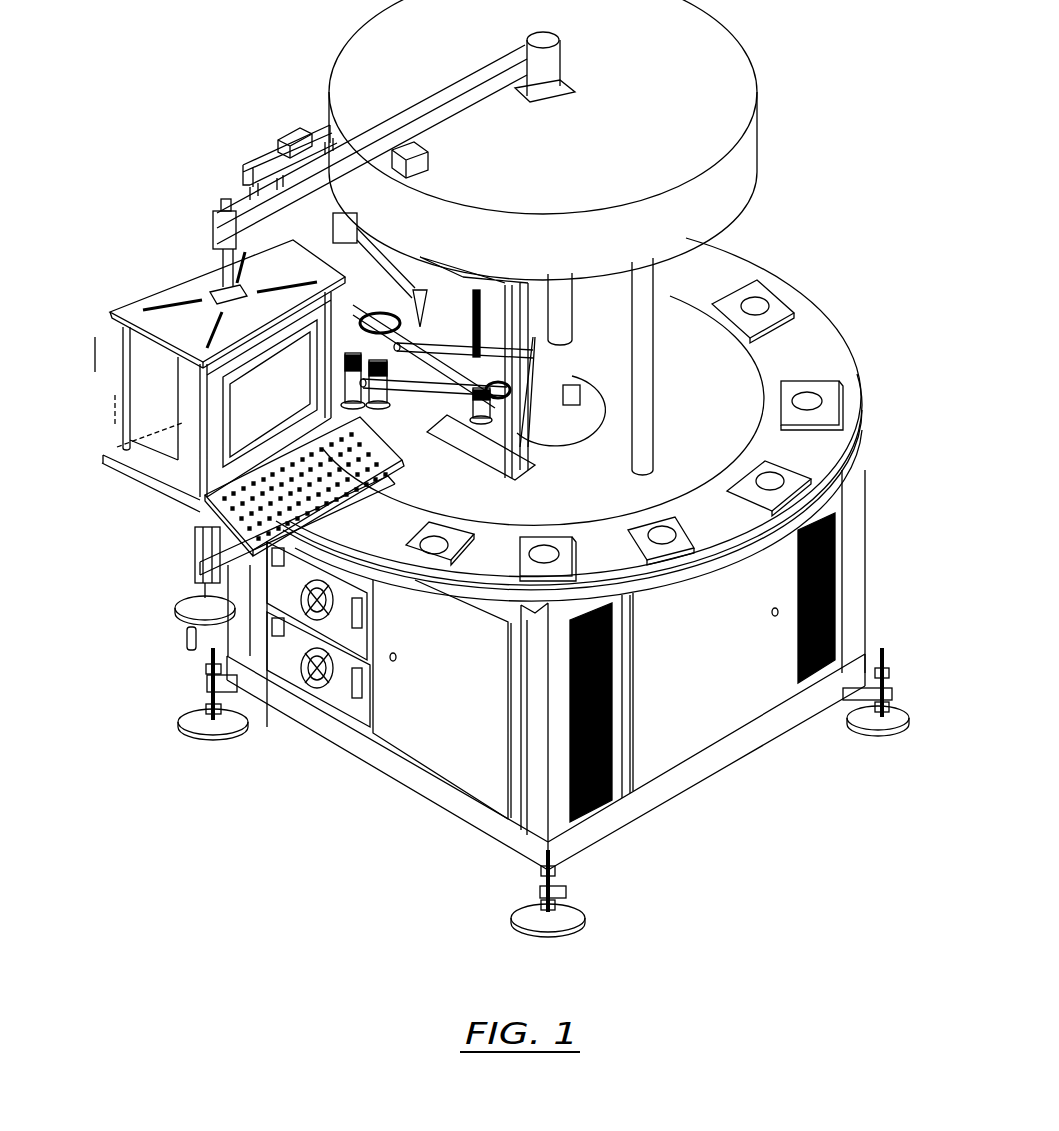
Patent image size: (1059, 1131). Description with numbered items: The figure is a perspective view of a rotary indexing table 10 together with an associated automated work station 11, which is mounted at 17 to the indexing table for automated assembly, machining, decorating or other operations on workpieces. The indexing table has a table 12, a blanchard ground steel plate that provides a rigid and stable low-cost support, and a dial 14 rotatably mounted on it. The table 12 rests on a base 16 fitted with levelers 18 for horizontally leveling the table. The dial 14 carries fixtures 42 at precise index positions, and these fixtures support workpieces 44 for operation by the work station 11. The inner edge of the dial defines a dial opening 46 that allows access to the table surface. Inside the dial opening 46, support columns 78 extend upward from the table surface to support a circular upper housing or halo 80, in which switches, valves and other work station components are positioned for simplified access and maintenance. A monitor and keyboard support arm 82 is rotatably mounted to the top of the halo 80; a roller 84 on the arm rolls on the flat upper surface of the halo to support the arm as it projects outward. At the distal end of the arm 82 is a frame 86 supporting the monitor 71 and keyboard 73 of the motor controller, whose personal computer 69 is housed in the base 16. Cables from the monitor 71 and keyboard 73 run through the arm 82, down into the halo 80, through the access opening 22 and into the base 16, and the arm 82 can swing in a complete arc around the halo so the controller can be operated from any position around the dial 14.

The rotary indexing table 10 is at (826, 62).
The automated work station 11 is at (438, 465).
The table 12 is at (858, 468).
The dial 14 is at (618, 566).
The base 16 is at (862, 565).
The mounting location 17 is at (528, 478).
The levelers 18 is at (192, 707).
The access opening 22 is at (590, 430).
The fixtures 42 is at (752, 323).
The workpieces 44 is at (812, 401).
The dial opening 46 is at (758, 438).
The personal computer 69 is at (287, 670).
The monitor 71 is at (143, 378).
The keyboard 73 is at (197, 558).
The support columns 78 is at (573, 320).
The halo 80 is at (753, 128).
The monitor and keyboard support arm 82 is at (490, 70).
The roller 84 is at (428, 156).
The frame 86 is at (183, 278).